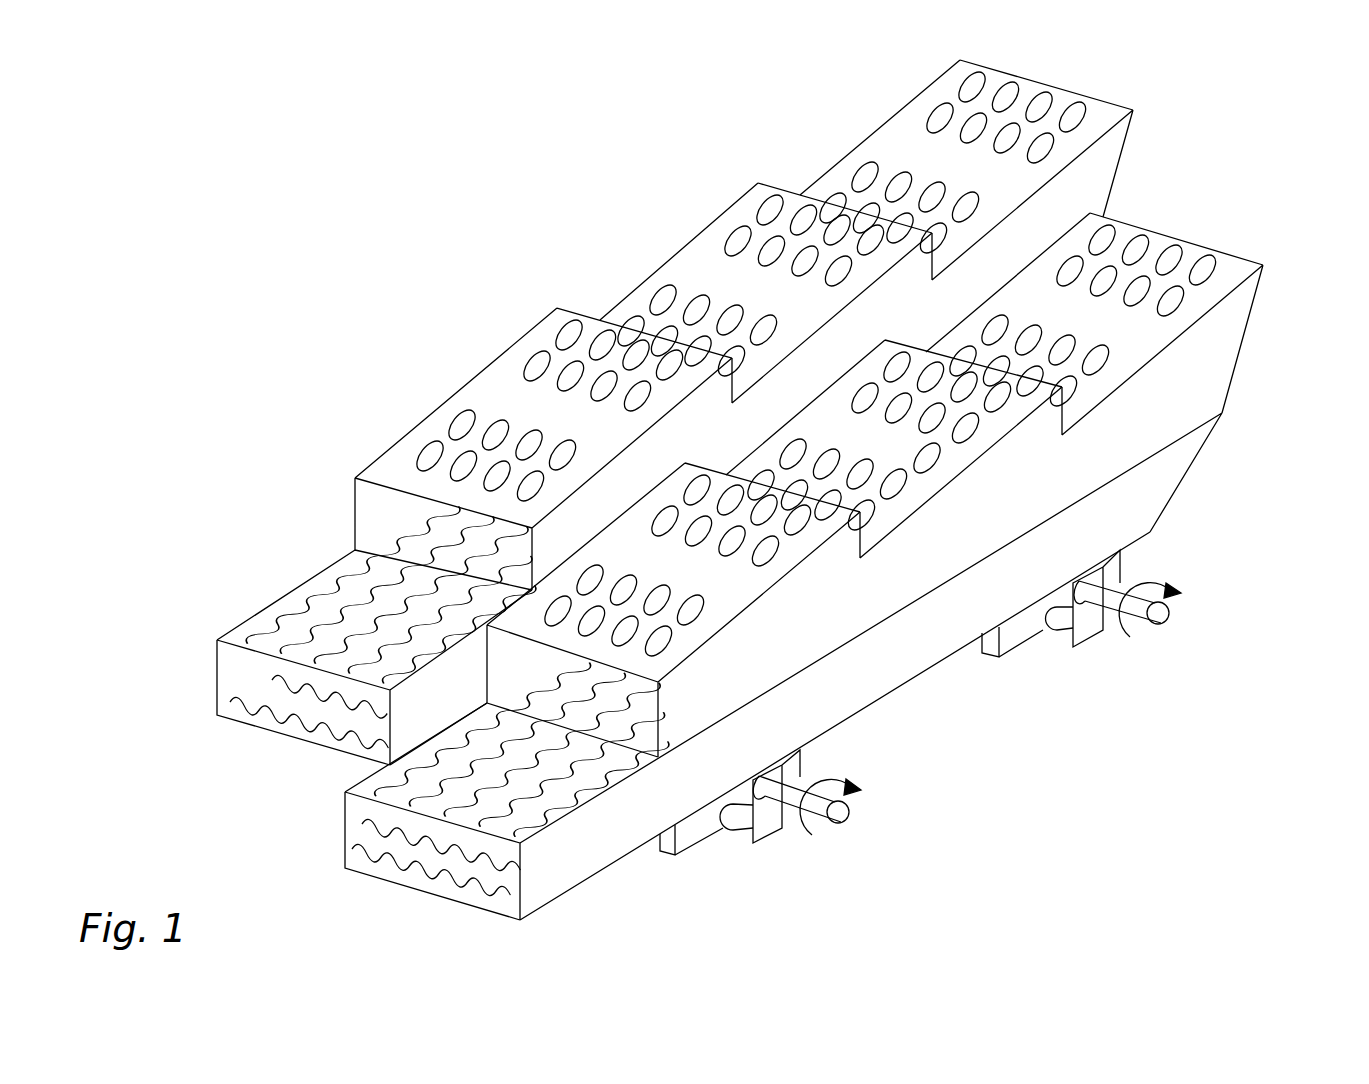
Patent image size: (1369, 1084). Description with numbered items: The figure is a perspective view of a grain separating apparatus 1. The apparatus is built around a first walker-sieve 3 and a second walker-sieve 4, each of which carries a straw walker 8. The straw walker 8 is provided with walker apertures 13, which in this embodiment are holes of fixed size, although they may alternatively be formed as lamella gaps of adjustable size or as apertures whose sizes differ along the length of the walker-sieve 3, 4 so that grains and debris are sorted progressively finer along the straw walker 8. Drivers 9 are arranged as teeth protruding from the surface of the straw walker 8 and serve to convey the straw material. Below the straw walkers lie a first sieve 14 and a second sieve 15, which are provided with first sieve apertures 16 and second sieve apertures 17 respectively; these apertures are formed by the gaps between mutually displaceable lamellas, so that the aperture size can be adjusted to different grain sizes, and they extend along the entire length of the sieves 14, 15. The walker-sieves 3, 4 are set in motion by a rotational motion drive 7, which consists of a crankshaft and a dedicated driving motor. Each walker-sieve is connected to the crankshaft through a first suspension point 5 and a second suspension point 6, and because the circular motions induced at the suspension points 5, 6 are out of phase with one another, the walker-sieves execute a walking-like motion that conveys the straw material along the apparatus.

The grain separating apparatus 1 is at (128, 131).
The first walker-sieve 3 is at (1172, 86).
The second walker-sieve 4 is at (1254, 220).
The first suspension point 5 is at (1113, 570).
The second suspension point 6 is at (803, 770).
The rotational motion drive 7 is at (1180, 598).
The straw walker 8 is at (702, 260).
The drivers 9 is at (1062, 407).
The walker apertures 13 is at (424, 447).
The first sieve 14 is at (267, 607).
The second sieve 15 is at (230, 718).
The first sieve apertures 16 is at (343, 613).
The second sieve apertures 17 is at (317, 728).